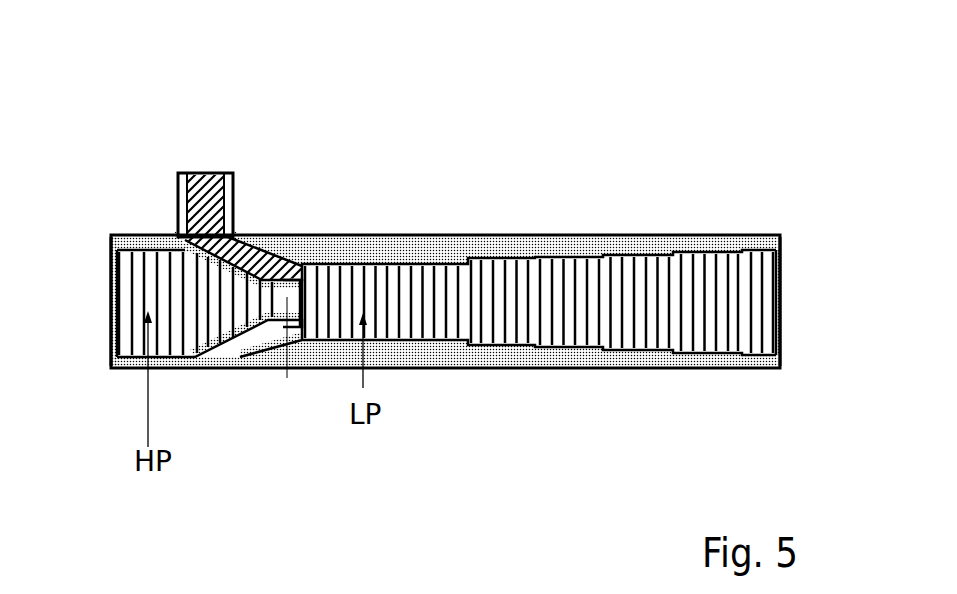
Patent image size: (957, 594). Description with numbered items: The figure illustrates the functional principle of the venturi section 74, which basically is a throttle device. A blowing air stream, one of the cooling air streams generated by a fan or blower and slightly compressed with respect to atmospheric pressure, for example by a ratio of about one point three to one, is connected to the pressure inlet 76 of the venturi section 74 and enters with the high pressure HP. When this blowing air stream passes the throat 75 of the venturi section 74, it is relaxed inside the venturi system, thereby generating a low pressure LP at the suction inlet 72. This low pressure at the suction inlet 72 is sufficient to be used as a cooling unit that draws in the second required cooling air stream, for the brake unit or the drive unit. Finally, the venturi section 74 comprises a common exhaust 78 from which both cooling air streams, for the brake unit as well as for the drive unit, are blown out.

The suction inlet 72 is at (205, 172).
The venturi section 74 is at (523, 113).
The throat 75 is at (303, 264).
The pressure inlet 76 is at (110, 298).
The common exhaust 78 is at (782, 300).